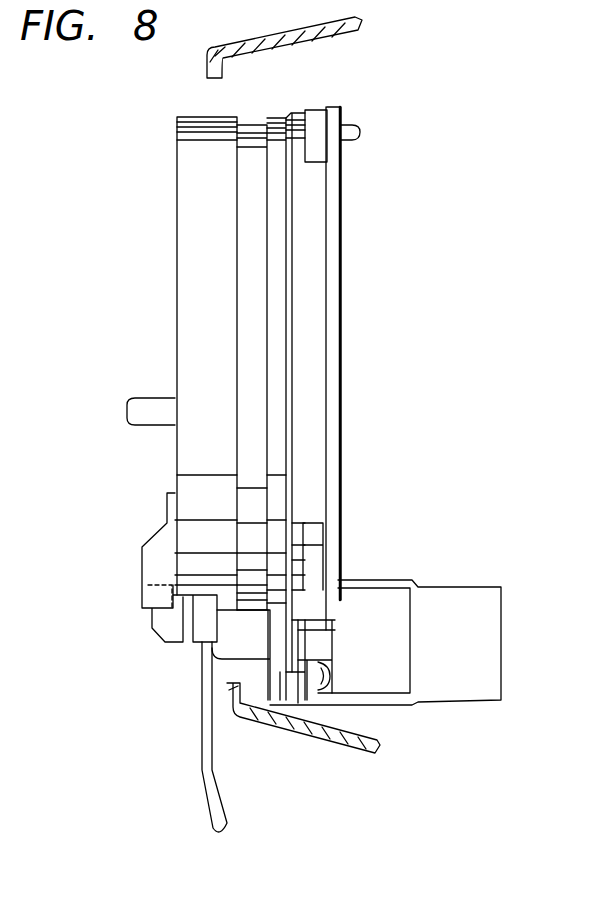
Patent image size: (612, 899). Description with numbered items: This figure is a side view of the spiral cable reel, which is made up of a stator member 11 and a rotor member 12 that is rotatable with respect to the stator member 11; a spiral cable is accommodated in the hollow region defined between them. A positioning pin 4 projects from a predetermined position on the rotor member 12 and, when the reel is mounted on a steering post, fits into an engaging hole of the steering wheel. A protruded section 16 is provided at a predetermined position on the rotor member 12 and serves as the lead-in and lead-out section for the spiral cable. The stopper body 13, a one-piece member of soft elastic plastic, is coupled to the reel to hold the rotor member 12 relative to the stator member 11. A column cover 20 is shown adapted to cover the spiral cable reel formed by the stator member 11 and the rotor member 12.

The positioning pin 4 is at (130, 412).
The stator member 11 is at (277, 273).
The rotor member 12 is at (185, 258).
The stopper body 13 is at (200, 732).
The protruded section 16 is at (145, 562).
The column cover 20 is at (342, 33).